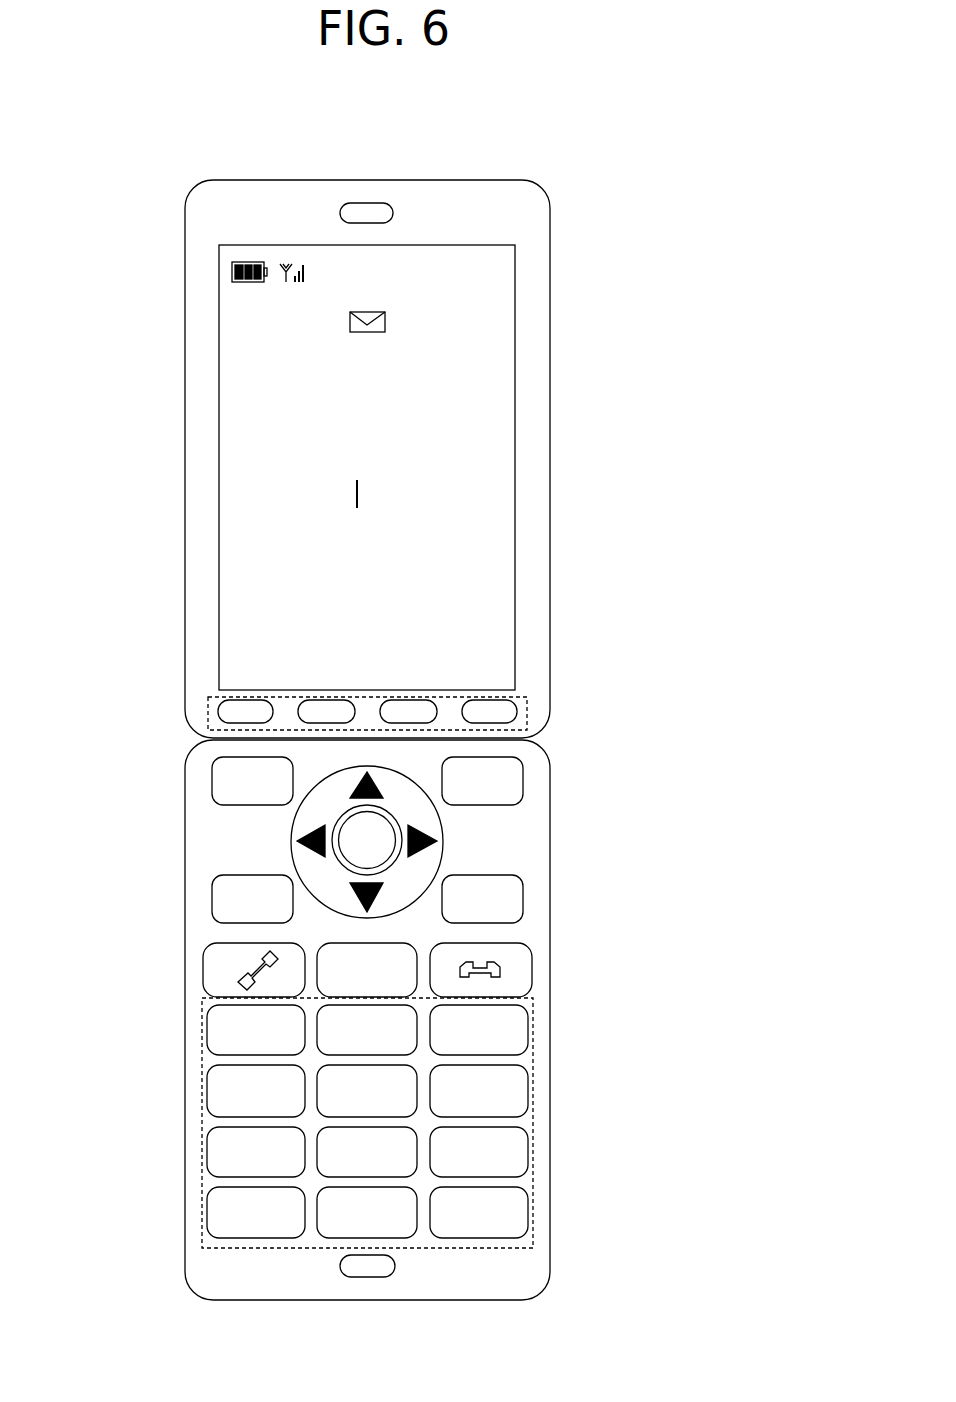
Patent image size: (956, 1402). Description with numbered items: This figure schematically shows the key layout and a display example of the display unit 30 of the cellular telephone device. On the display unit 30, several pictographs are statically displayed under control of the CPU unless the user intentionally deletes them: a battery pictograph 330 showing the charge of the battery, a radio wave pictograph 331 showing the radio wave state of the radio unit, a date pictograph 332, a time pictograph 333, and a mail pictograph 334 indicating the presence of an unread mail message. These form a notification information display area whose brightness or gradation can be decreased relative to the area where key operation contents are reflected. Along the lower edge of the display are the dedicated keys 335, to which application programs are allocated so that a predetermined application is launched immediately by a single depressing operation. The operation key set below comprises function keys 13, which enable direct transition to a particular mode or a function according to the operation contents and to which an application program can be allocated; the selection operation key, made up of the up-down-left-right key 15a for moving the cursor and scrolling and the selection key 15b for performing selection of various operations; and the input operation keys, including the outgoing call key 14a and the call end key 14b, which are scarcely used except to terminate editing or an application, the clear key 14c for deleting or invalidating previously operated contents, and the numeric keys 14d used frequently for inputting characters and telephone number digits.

The display unit 30 is at (470, 418).
The battery pictograph 330 is at (248, 257).
The radio wave pictograph 331 is at (297, 257).
The date pictograph 332 is at (390, 257).
The time pictograph 333 is at (488, 257).
The mail pictograph 334 is at (386, 318).
The dedicated keys 335 is at (527, 698).
The function keys 13 is at (236, 790).
The up-down-left-right key 15a is at (312, 817).
The selection key 15b is at (360, 855).
The outgoing call key 14a is at (225, 972).
The call end key 14b is at (506, 960).
The clear key 14c is at (397, 982).
The numeric keys 14d is at (205, 1120).